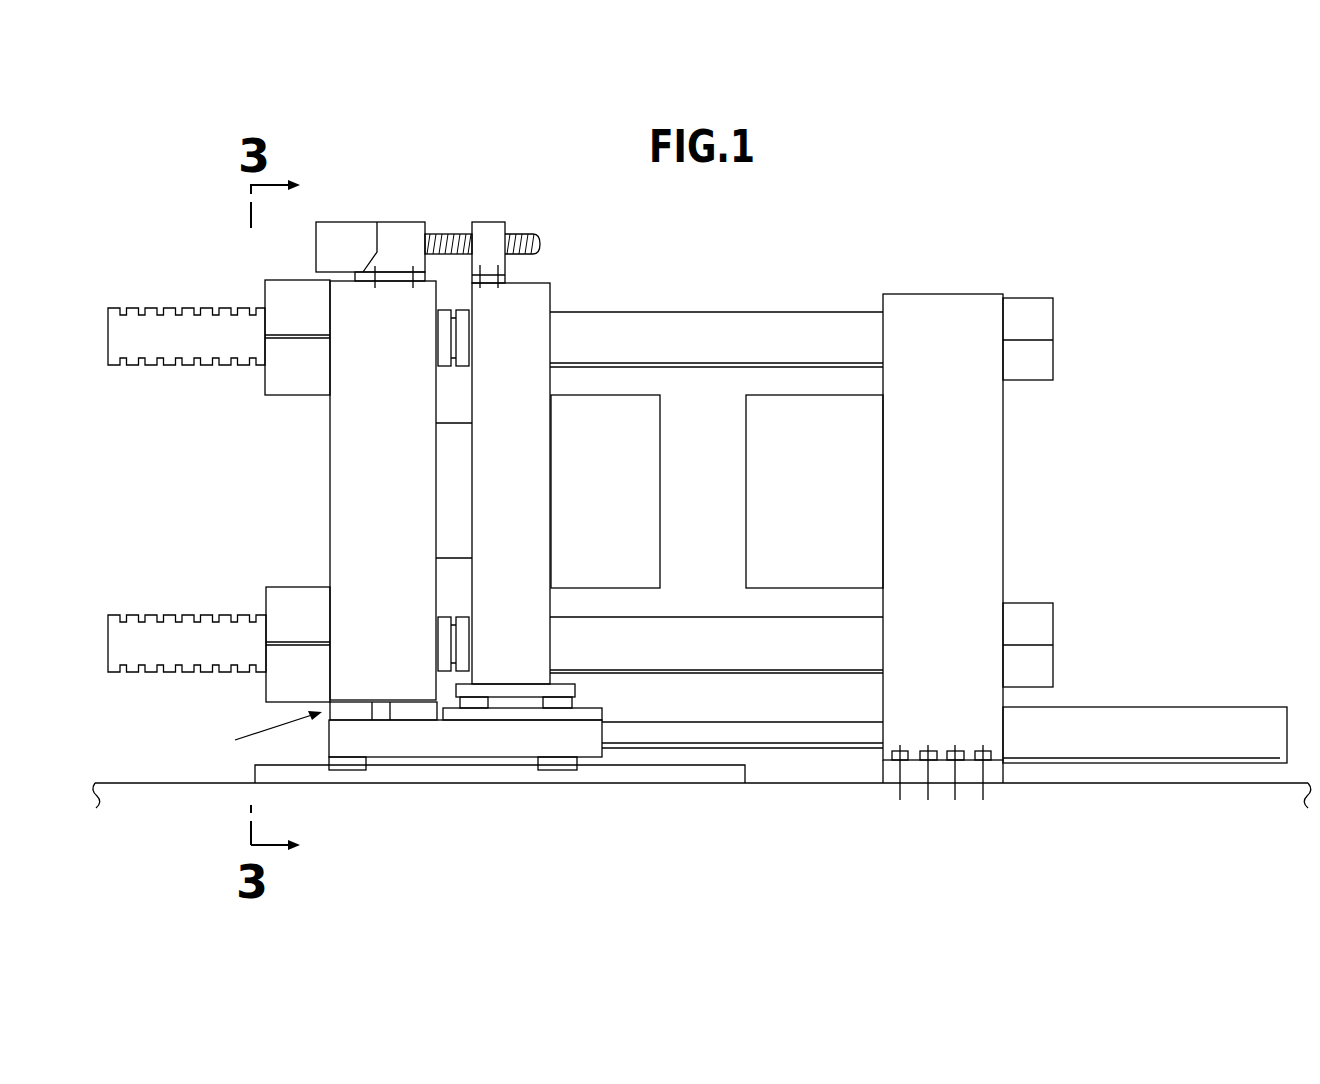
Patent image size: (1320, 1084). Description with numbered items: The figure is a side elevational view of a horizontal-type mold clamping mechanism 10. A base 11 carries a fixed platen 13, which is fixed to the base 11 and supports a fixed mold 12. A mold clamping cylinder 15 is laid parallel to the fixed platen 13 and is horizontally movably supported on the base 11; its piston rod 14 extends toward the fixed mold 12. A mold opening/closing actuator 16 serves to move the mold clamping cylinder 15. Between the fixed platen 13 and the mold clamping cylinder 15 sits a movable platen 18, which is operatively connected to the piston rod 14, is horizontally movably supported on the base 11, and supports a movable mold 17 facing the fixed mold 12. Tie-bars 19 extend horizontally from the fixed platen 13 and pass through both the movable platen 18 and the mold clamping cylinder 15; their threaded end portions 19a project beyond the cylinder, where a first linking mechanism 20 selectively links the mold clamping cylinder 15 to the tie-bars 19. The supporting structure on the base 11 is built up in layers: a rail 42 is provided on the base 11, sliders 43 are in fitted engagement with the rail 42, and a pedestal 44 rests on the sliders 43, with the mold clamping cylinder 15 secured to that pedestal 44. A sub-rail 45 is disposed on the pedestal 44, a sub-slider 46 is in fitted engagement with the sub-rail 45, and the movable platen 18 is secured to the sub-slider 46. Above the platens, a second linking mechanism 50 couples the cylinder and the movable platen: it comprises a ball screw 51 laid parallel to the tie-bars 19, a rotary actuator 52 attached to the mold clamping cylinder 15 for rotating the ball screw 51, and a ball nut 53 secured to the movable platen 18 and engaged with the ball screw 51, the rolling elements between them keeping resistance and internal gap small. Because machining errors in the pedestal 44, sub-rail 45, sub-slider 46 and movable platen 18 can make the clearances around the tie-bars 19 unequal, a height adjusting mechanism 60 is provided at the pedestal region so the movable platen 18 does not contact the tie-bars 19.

The mold clamping mechanism 10 is at (1068, 250).
The base 11 is at (804, 795).
The fixed mold 12 is at (795, 425).
The fixed platen 13 is at (940, 315).
The piston rod 14 is at (455, 460).
The mold clamping cylinder 15 is at (383, 515).
The mold opening/closing actuator 16 is at (1160, 725).
The movable mold 17 is at (600, 415).
The movable platen 18 is at (528, 318).
The tie-bar 19 is at (728, 335).
The threaded portion of tie bar 19a is at (198, 315).
The first linking mechanism 20 is at (274, 276).
The rail 42 is at (452, 773).
The slider 43 is at (347, 770).
The pedestal 44 is at (405, 740).
The sub-rail 45 is at (510, 712).
The sub-slider 46 is at (575, 690).
The second linking mechanism 50 is at (401, 215).
The ball screw 51 is at (456, 232).
The rotary actuator 52 is at (352, 222).
The ball nut 53 is at (490, 222).
The height adjusting mechanism 60 is at (249, 733).